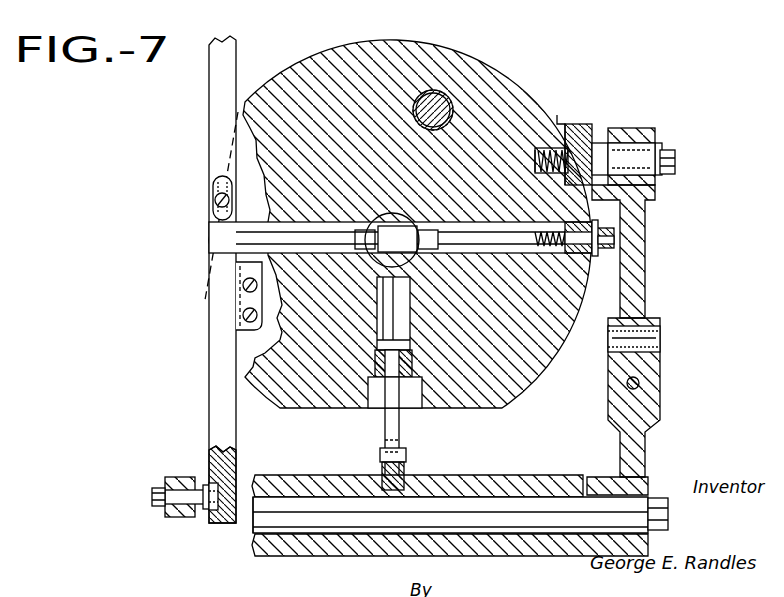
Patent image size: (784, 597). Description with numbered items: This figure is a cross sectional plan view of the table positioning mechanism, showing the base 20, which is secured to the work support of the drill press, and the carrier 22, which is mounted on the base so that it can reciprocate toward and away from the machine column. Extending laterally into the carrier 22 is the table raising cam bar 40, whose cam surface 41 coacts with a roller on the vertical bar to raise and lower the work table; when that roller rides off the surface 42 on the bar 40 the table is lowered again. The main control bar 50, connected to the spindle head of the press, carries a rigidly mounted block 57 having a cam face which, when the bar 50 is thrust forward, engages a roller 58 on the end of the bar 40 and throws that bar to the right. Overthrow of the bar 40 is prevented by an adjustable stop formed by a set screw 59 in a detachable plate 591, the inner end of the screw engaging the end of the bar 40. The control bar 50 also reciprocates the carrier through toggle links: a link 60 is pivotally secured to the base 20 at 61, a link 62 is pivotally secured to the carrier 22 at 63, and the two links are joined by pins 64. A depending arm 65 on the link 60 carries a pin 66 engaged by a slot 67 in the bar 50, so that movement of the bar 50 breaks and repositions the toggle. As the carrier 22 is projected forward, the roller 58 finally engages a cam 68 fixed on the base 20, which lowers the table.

The base 20 is at (505, 458).
The carrier 22 is at (497, 88).
The cam bar 40 is at (400, 237).
The cam surface 41 is at (397, 239).
The surface 42 is at (436, 238).
The main control bar 50 is at (224, 91).
The block 57 is at (212, 193).
The roller 58 is at (208, 243).
The set screw 59 is at (612, 233).
The detachable plate 591 is at (614, 252).
The toggle link 60 is at (655, 394).
The pivot 61 is at (670, 517).
The toggle link 62 is at (646, 283).
The pivot 63 is at (676, 162).
The pins 64 is at (660, 341).
The depending arm 65 is at (182, 478).
The pin 66 is at (212, 508).
The slot 67 is at (215, 468).
The cam 68 is at (240, 272).